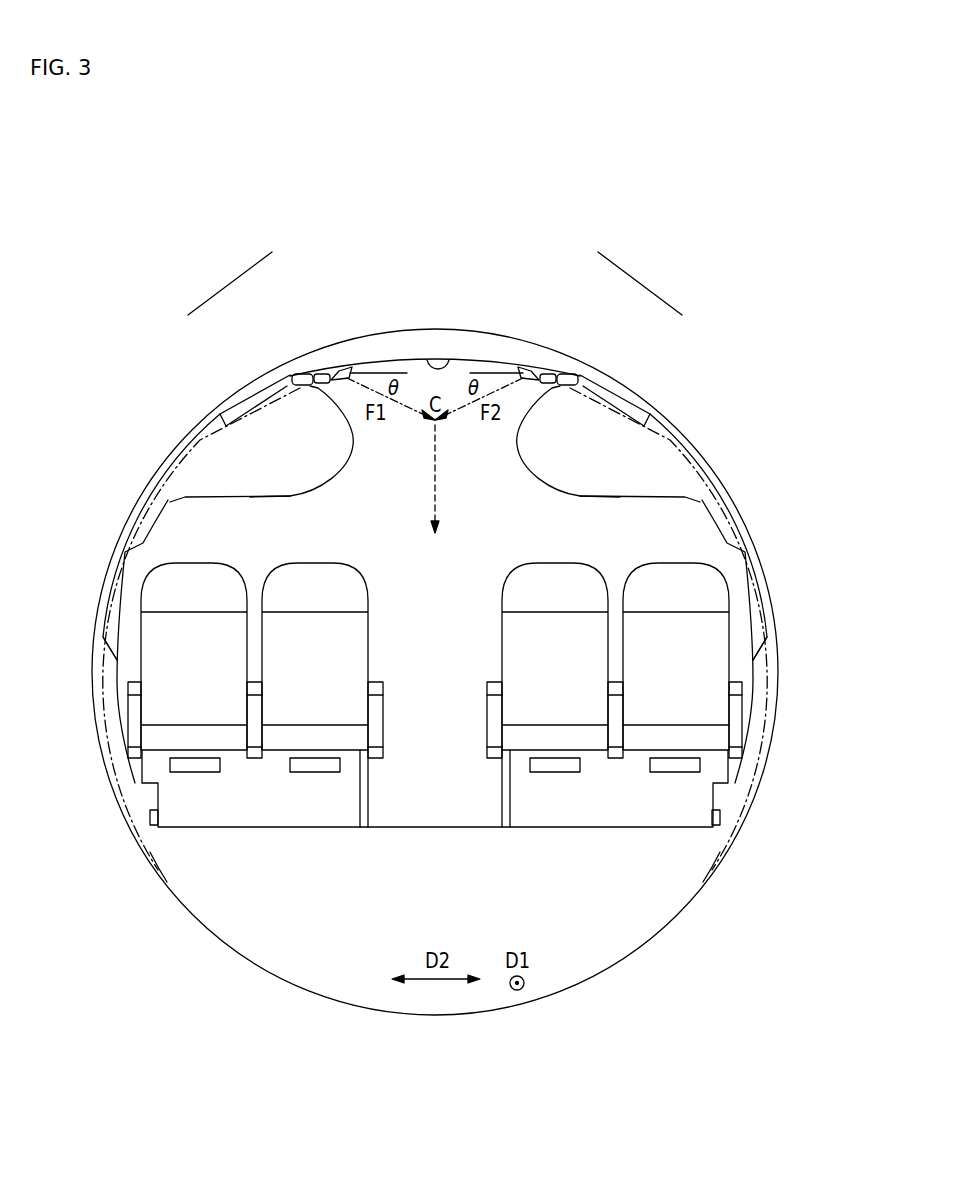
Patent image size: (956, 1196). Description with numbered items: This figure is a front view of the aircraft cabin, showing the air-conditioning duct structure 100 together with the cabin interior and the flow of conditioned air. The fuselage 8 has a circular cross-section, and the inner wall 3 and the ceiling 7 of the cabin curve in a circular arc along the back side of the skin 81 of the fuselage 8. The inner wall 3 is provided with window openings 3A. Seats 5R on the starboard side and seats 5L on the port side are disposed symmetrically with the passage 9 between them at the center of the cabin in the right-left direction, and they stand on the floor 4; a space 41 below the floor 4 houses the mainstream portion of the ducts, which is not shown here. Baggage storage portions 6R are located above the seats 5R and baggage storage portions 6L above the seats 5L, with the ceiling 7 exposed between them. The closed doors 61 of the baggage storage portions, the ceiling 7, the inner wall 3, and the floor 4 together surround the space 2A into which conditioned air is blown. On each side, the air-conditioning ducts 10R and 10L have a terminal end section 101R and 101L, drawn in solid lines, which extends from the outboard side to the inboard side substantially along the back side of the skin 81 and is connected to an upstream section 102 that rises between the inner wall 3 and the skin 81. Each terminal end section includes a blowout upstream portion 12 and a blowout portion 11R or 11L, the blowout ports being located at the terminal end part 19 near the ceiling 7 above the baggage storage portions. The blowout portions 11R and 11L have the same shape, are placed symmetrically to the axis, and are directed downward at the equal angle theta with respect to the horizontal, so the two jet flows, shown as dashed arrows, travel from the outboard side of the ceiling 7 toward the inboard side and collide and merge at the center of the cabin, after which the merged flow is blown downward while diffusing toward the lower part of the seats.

The space 2A is at (282, 541).
The inner wall 3 is at (158, 522).
The window openings 3A is at (115, 585).
The floor 4 is at (406, 825).
The space below the floor 41 is at (448, 896).
The seats on the starboard side 5R is at (207, 669).
The seats on the port side 5L is at (567, 669).
The baggage storage portions on the starboard side 6R is at (310, 451).
The baggage storage portions on the port side 6L is at (586, 451).
The doors of the baggage storage portions 61 is at (322, 484).
The ceiling 7 is at (448, 368).
The fuselage 8 is at (686, 910).
The skin 81 is at (705, 890).
The passage 9 is at (443, 647).
The air-conditioning duct on the starboard side 10R is at (133, 512).
The air-conditioning duct on the port side 10L is at (737, 508).
The blowout portion of the starboard duct 11R is at (293, 288).
The blowout portion of the port duct 11L is at (611, 288).
The blowout upstream portion 12 is at (258, 392).
The terminal end part 19 is at (352, 368).
The air-conditioning duct structure 100 is at (683, 442).
The terminal end section of the starboard duct 101R is at (224, 269).
The terminal end section of the port duct 101L is at (641, 269).
The upstream section 102 is at (182, 455).